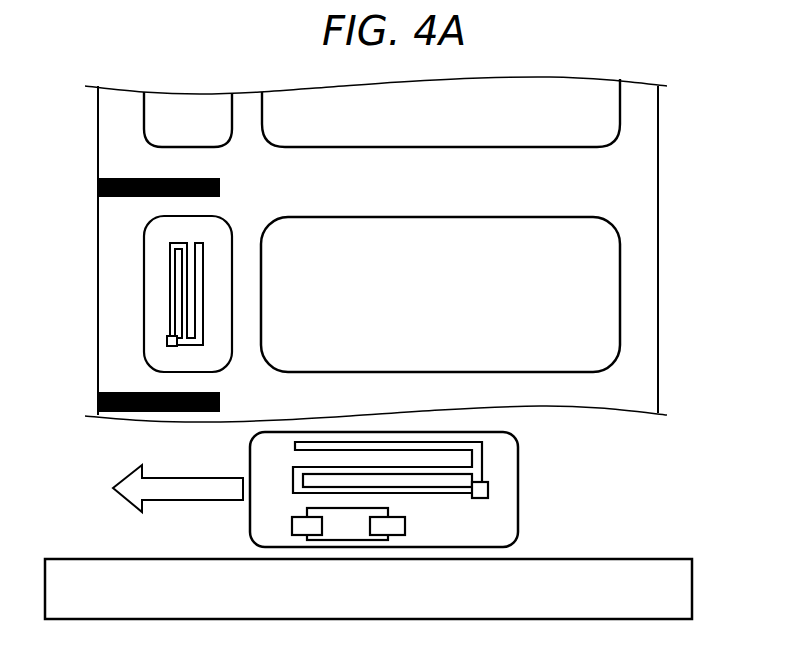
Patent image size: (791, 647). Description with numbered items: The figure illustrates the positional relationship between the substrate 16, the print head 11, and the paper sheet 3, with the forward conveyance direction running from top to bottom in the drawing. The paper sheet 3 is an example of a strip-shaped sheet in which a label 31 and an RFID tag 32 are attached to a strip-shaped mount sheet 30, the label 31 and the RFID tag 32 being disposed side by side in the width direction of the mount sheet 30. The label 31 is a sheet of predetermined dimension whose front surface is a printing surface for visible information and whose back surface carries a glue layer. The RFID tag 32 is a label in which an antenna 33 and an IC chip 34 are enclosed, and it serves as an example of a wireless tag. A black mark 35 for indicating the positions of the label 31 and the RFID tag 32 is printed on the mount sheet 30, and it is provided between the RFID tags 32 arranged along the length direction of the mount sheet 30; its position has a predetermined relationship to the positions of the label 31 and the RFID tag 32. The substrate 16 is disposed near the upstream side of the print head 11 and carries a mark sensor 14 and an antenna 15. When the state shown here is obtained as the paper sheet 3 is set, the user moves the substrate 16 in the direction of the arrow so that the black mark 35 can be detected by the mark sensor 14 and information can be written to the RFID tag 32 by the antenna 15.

The paper sheet 3 is at (621, 160).
The mount sheet 30 is at (112, 133).
The label 31 is at (592, 300).
The RFID tag 32 is at (144, 248).
The antenna 33 is at (172, 294).
The IC chip 34 is at (167, 342).
The black mark 35 is at (98, 190).
The print head 11 is at (680, 589).
The mark sensor 14 is at (398, 527).
The antenna 15 is at (474, 462).
The substrate 16 is at (510, 448).